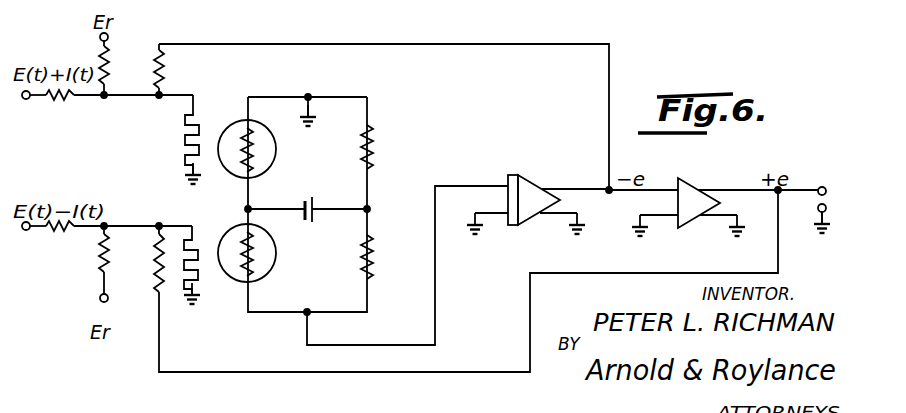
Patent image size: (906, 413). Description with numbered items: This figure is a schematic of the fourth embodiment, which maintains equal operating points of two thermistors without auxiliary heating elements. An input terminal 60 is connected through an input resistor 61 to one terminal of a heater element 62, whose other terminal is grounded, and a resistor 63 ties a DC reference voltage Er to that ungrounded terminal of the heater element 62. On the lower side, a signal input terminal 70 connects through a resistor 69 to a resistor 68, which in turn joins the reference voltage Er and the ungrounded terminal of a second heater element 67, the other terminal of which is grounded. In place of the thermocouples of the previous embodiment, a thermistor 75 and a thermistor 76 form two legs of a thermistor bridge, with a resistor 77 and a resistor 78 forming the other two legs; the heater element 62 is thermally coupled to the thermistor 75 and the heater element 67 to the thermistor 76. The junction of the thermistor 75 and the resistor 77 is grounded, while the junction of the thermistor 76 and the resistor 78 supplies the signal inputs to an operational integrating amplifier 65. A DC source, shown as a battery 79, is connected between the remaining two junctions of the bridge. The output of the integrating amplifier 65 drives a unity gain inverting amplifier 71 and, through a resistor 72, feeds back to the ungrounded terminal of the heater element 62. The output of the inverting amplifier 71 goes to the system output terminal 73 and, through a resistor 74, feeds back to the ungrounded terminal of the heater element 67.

The input terminal 60 is at (28, 100).
The input resistor 61 is at (66, 100).
The heater element 62 is at (200, 120).
The resistor 63 is at (108, 55).
The operational integrating amplifier 65 is at (530, 176).
The heater element 67 is at (196, 245).
The resistor 68 is at (110, 252).
The resistor 69 is at (56, 231).
The signal input terminal 70 is at (26, 231).
The unity gain inverting amplifier 71 is at (696, 187).
The resistor 72 is at (165, 68).
The system output terminal 73 is at (820, 186).
The resistor 74 is at (154, 276).
The thermistor 75 is at (274, 158).
The thermistor 76 is at (274, 262).
The resistor 77 is at (372, 130).
The resistor 78 is at (372, 240).
The battery 79 is at (313, 200).